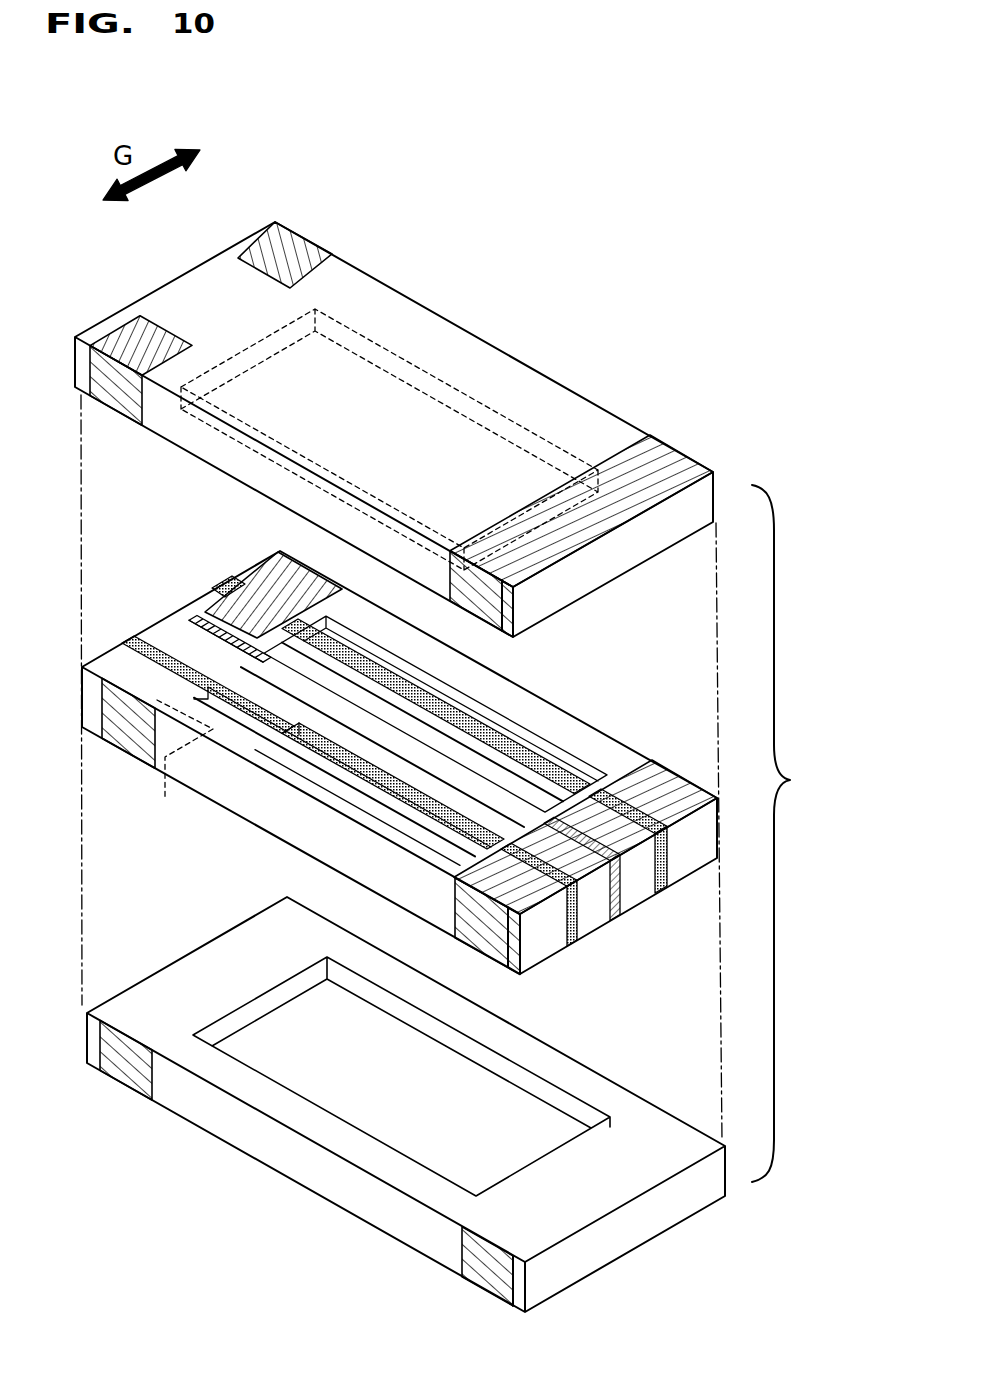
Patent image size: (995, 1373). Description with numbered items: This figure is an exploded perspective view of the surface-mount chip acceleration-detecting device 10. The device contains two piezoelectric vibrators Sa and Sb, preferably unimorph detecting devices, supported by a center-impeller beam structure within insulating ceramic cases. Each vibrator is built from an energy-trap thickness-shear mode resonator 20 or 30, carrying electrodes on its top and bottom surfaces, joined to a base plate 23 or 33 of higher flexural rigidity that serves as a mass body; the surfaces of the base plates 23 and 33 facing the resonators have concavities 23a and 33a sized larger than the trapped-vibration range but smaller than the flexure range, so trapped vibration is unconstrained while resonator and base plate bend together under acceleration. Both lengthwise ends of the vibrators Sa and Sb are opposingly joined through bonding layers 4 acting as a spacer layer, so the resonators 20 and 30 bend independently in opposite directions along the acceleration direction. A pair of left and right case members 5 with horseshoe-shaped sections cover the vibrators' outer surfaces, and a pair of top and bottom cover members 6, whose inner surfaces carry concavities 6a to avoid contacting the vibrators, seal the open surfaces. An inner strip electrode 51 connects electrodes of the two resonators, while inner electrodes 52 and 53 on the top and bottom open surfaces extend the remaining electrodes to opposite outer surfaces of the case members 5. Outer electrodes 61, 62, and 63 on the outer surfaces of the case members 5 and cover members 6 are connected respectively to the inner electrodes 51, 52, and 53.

The acceleration-detecting device 10 is at (791, 833).
The cover members 6 is at (505, 348).
The concavities 6a is at (415, 352).
The outer electrode 61 is at (648, 472).
The outer electrode 62 is at (300, 245).
The outer electrode 63 is at (118, 330).
The case members 5 is at (600, 748).
The inner strip electrode 51 is at (662, 785).
The inner electrode 52 is at (268, 582).
The inner electrode 53 is at (165, 782).
The bonding layers 4 is at (180, 607).
The resonator 20 is at (225, 585).
The base plate 23 is at (205, 630).
The concavity 23a is at (498, 742).
The resonator 30 is at (155, 665).
The base plate 33 is at (170, 640).
The concavity 33a is at (290, 748).
The piezoelectric vibrator Sa is at (676, 882).
The piezoelectric vibrator Sb is at (620, 908).